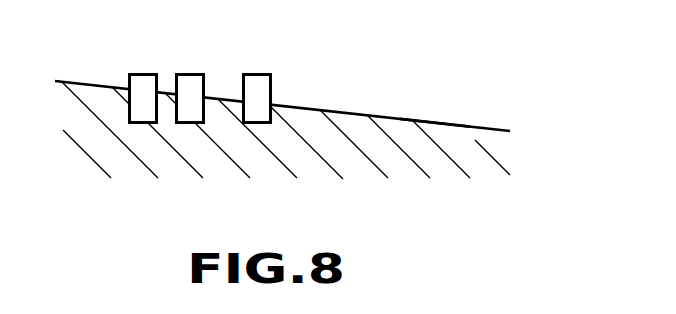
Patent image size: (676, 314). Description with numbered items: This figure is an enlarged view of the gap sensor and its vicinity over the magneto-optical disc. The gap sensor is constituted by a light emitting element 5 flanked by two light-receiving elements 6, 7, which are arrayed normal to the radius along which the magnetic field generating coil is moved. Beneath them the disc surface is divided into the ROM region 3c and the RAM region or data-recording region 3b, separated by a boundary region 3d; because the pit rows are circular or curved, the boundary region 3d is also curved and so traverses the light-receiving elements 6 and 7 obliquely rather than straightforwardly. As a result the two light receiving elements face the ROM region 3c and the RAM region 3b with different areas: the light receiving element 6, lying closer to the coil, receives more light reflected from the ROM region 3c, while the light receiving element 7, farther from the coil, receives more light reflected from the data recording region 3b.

The RAM region 3b is at (367, 105).
The ROM region 3c is at (470, 138).
The boundary region 3d is at (432, 120).
The light emitting element 5 is at (193, 77).
The light-receiving element 6 is at (146, 76).
The light-receiving element 7 is at (260, 77).